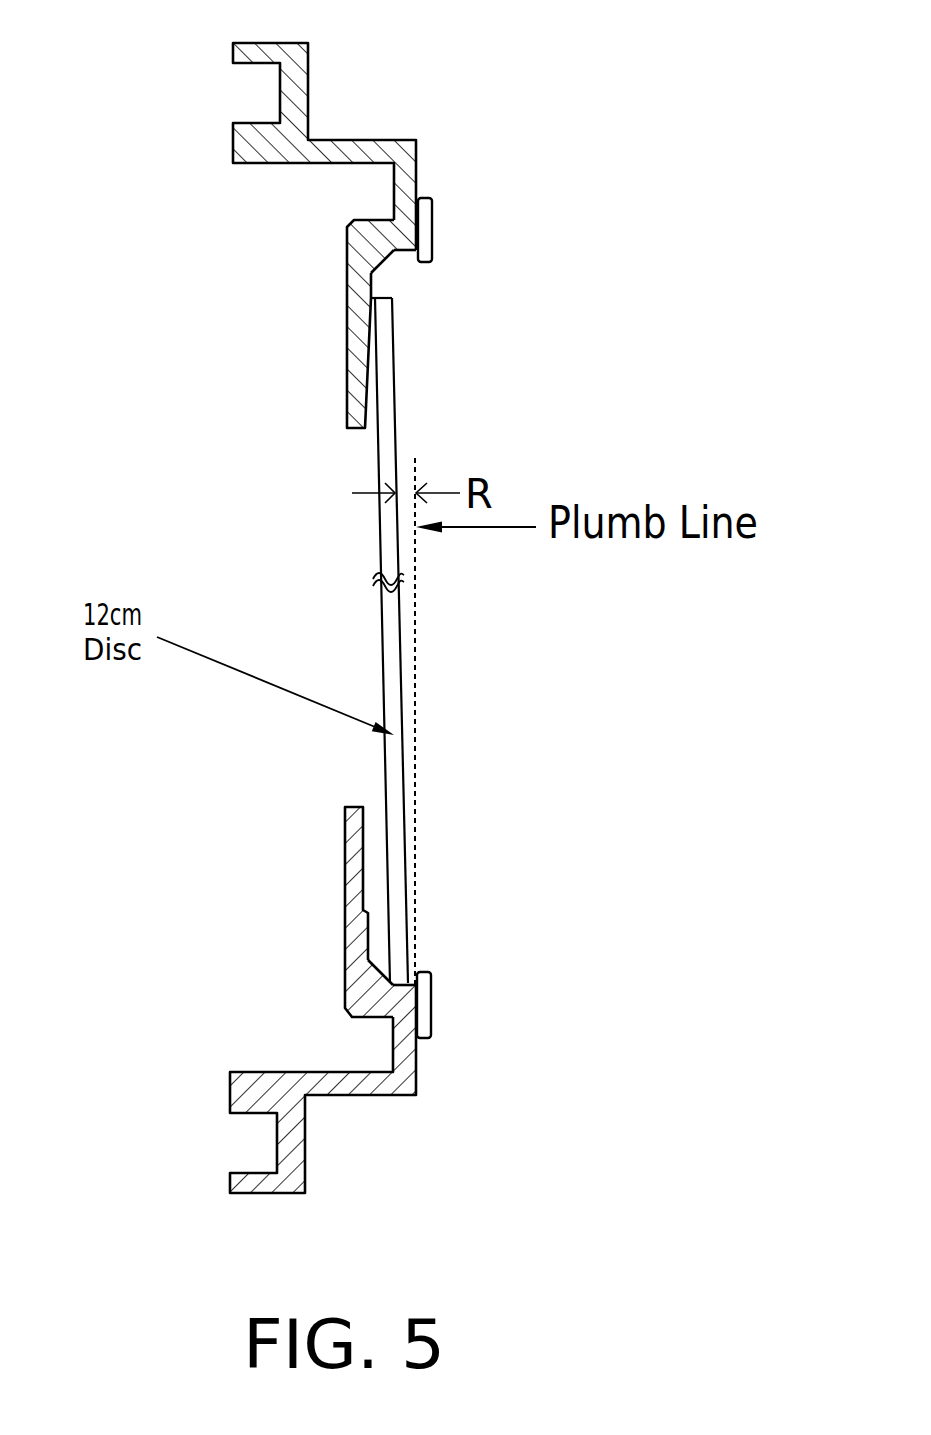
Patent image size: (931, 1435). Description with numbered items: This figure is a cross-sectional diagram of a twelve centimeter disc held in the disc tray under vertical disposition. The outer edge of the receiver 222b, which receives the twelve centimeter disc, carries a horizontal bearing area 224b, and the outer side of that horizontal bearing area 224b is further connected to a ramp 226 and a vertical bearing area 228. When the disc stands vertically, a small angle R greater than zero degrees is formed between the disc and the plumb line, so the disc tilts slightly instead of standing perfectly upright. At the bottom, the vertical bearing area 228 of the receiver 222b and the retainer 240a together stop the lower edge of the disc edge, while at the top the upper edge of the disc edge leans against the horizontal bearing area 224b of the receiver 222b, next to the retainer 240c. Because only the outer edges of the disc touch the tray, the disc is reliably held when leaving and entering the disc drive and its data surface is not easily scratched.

The receiver 222b is at (626, 63).
The horizontal bearing area 224b is at (374, 298).
The ramp 226 is at (390, 275).
The vertical bearing area 228 is at (406, 254).
The retainer 240c is at (426, 231).
The retainer 240a is at (425, 1006).